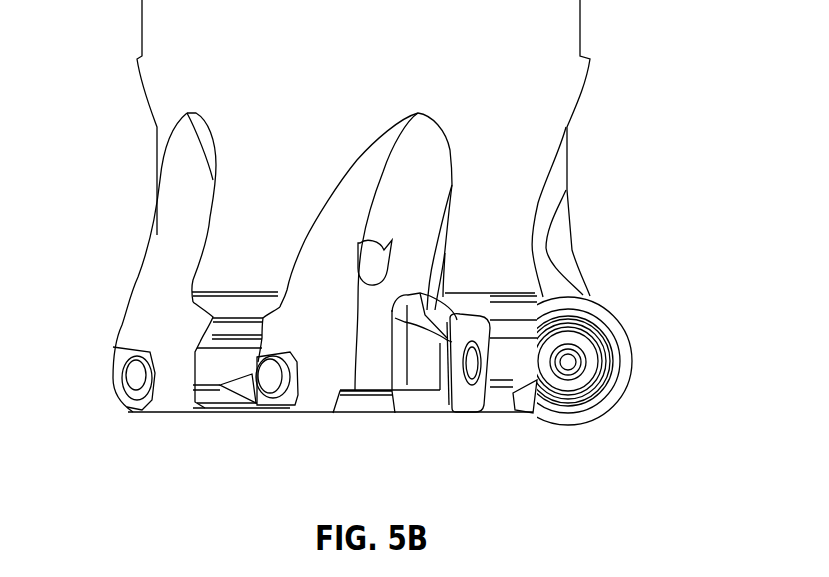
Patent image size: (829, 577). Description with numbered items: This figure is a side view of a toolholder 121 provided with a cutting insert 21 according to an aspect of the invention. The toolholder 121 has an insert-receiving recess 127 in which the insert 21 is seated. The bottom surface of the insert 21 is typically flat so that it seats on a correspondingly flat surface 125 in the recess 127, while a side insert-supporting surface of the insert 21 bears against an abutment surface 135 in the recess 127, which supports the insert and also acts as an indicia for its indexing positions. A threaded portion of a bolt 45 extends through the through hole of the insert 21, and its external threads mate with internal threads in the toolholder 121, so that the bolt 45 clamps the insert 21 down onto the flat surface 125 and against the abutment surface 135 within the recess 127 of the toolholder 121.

The toolholder 121 is at (582, 155).
The flat surface 125 is at (467, 343).
The abutment surface 135 is at (430, 345).
The recess 127 is at (405, 361).
The bolt 45 is at (561, 363).
The insert 21 is at (622, 338).